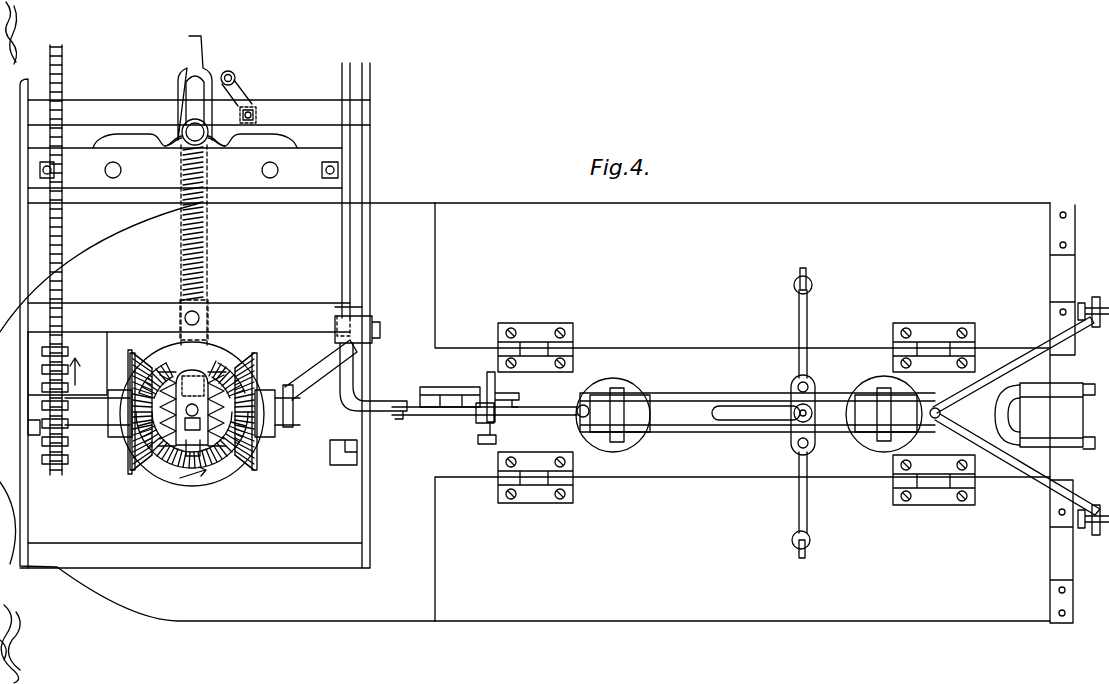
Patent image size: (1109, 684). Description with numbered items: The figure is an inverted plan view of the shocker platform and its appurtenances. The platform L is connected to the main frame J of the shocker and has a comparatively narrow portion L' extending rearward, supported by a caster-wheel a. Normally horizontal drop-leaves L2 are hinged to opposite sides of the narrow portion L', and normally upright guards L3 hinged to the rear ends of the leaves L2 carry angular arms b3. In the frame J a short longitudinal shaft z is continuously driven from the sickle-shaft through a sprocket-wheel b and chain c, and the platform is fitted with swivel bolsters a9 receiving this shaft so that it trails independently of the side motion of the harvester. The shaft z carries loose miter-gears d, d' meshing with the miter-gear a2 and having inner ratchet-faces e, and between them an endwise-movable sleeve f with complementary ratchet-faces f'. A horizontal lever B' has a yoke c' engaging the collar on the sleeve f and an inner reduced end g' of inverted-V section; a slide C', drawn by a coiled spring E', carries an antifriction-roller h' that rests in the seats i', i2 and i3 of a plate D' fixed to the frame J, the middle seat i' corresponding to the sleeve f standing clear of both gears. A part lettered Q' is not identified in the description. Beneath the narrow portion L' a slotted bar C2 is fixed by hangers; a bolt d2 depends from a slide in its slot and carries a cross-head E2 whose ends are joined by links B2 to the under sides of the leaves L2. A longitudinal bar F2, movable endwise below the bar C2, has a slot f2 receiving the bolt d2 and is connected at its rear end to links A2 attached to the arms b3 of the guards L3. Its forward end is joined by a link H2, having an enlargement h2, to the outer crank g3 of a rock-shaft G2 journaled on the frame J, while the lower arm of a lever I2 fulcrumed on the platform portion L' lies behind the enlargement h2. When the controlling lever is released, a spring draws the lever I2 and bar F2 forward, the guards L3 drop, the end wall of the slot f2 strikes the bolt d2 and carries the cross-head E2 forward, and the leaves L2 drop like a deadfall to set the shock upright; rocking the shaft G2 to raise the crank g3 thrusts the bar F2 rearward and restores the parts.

The platform L is at (525, 342).
The drop-leaves L2 is at (742, 412).
The narrow platform portion L' is at (736, 414).
The rear guards L3 is at (1072, 272).
The angular arms b3 is at (1093, 431).
The chain c is at (73, 260).
The sprocket-wheel b is at (62, 462).
The rock-shaft G2 is at (345, 272).
The plate D' is at (185, 186).
The seat i2 is at (150, 142).
The middle seat i' is at (171, 155).
The seat i3 is at (245, 140).
The antifriction-roller h' is at (223, 152).
The inner reduced end of lever g' is at (208, 87).
The slide C' is at (166, 107).
The lever Q' is at (257, 94).
The horizontal lever B' is at (208, 245).
The coiled spring E' is at (222, 291).
The miter-gear a2 is at (230, 465).
The yoke c' is at (206, 401).
The miter-gear d' is at (236, 403).
The ratchet-faces e is at (155, 375).
The sleeve f is at (187, 359).
The ratchet-faces f' is at (273, 432).
The swivel bolsters a9 is at (118, 418).
The miter-gear d is at (115, 418).
The shaft z is at (296, 412).
The main frame J is at (336, 455).
The outer crank g3 is at (384, 410).
The link H2 is at (445, 408).
The lever I2 is at (437, 396).
The enlargement h2 is at (500, 392).
The longitudinal bar F2 is at (687, 428).
The slotted bar C2 is at (710, 432).
The slot f2 is at (768, 422).
The bolt d2 is at (812, 413).
The cross-head E2 is at (812, 384).
The links B2 is at (797, 315).
The links A2 is at (1005, 352).
The caster-wheel a is at (1045, 416).